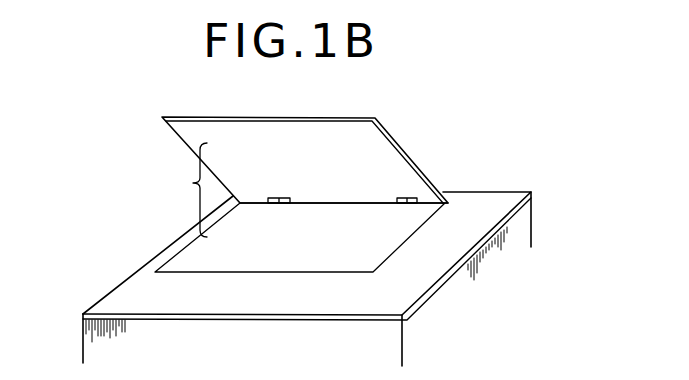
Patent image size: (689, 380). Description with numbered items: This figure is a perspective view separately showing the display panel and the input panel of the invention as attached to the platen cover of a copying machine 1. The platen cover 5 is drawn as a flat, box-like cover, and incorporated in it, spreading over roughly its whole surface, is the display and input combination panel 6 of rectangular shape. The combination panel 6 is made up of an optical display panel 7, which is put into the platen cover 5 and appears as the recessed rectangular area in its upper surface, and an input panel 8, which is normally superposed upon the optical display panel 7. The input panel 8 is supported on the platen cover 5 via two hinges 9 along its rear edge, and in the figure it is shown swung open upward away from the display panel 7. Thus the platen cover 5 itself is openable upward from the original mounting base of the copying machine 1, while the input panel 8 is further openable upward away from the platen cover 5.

The copying machine 1 is at (347, 224).
The platen cover 5 is at (507, 198).
The display and input combination panel 6 is at (176, 190).
The optical display panel 7 is at (245, 263).
The input panel 8 is at (390, 130).
The hinges 9 is at (397, 205).